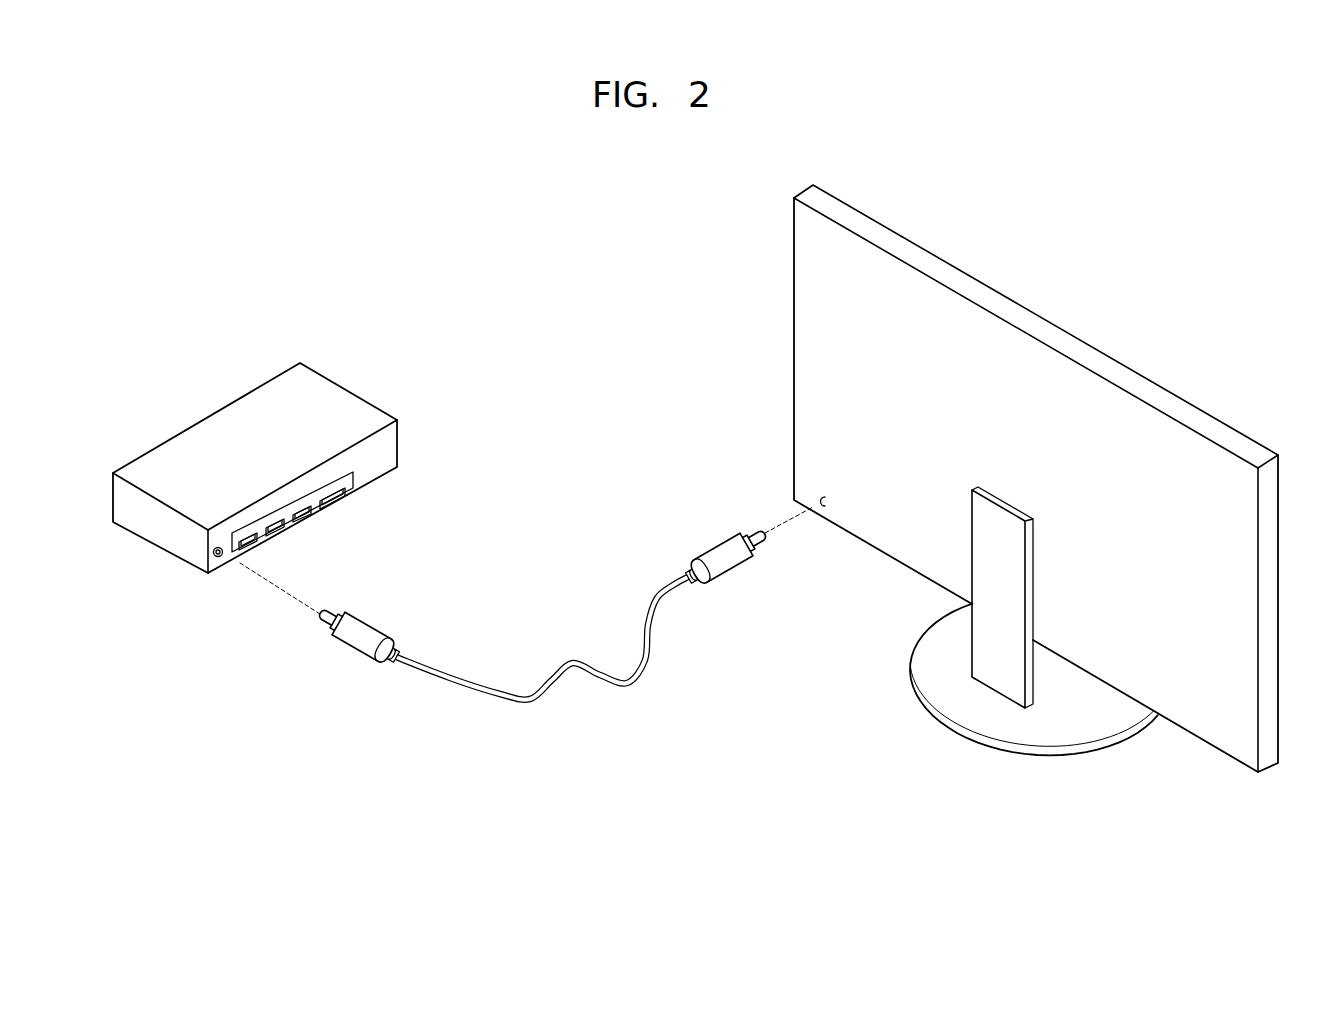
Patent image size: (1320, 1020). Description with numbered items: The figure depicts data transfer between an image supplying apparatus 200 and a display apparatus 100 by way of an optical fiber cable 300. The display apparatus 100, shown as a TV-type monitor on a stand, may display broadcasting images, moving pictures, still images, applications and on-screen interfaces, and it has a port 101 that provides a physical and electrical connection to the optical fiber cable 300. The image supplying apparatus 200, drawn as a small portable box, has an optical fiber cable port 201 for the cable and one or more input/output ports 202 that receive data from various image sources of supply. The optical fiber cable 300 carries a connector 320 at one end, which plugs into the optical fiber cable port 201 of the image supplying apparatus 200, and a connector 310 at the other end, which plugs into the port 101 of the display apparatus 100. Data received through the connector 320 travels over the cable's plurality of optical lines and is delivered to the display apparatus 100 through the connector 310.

The display apparatus 100 is at (1063, 332).
The port 101 is at (818, 500).
The image supplying apparatus 200 is at (237, 410).
The optical fiber cable port 201 is at (225, 557).
The input/output (I/O) ports 202 is at (348, 488).
The optical fiber cable 300 is at (627, 682).
The connector 310 is at (737, 567).
The connector 320 is at (362, 648).